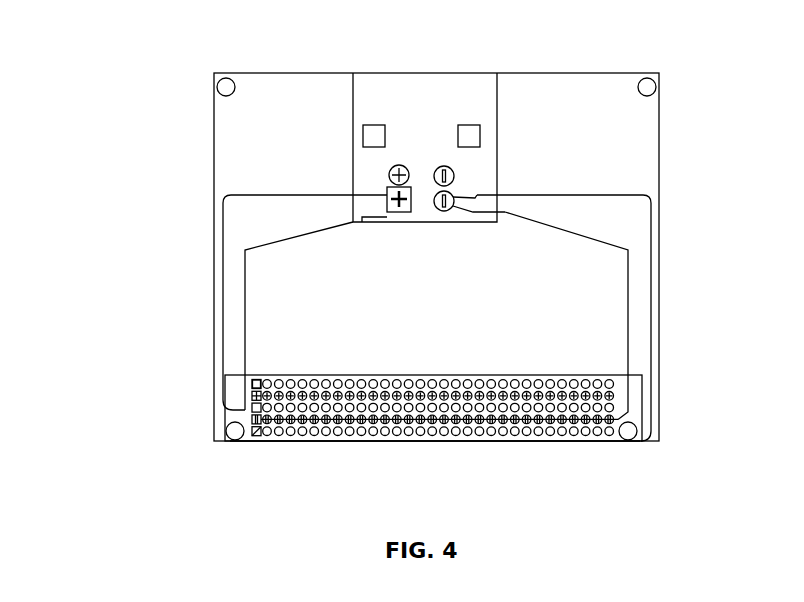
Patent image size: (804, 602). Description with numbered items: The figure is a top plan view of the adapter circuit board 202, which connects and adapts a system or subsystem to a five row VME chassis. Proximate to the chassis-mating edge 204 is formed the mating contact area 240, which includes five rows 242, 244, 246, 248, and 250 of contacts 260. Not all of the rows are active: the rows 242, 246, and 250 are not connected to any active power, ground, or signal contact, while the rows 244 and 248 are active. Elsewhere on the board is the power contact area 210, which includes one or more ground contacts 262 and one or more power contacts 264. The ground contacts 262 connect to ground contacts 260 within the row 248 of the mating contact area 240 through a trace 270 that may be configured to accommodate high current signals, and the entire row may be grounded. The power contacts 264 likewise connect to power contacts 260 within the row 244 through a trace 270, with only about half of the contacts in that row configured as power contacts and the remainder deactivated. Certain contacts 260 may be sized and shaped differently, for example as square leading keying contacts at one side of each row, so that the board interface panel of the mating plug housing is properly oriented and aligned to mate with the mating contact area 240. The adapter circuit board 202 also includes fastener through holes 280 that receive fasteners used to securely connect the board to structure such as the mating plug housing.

The adapter circuit board 202 is at (121, 75).
The chassis-mating edge 204 is at (246, 443).
The power contact area 210 is at (485, 100).
The mating contact area 240 is at (603, 440).
The row of contacts 242 is at (250, 386).
The row of contacts 244 is at (250, 398).
The row of contacts 246 is at (250, 410).
The row of contacts 248 is at (250, 421).
The row of contacts 250 is at (250, 433).
The contacts 260 is at (497, 428).
The ground contacts 262 is at (443, 167).
The power contacts 264 is at (399, 165).
The trace 270 is at (223, 255).
The fastener through holes 280 is at (226, 78).